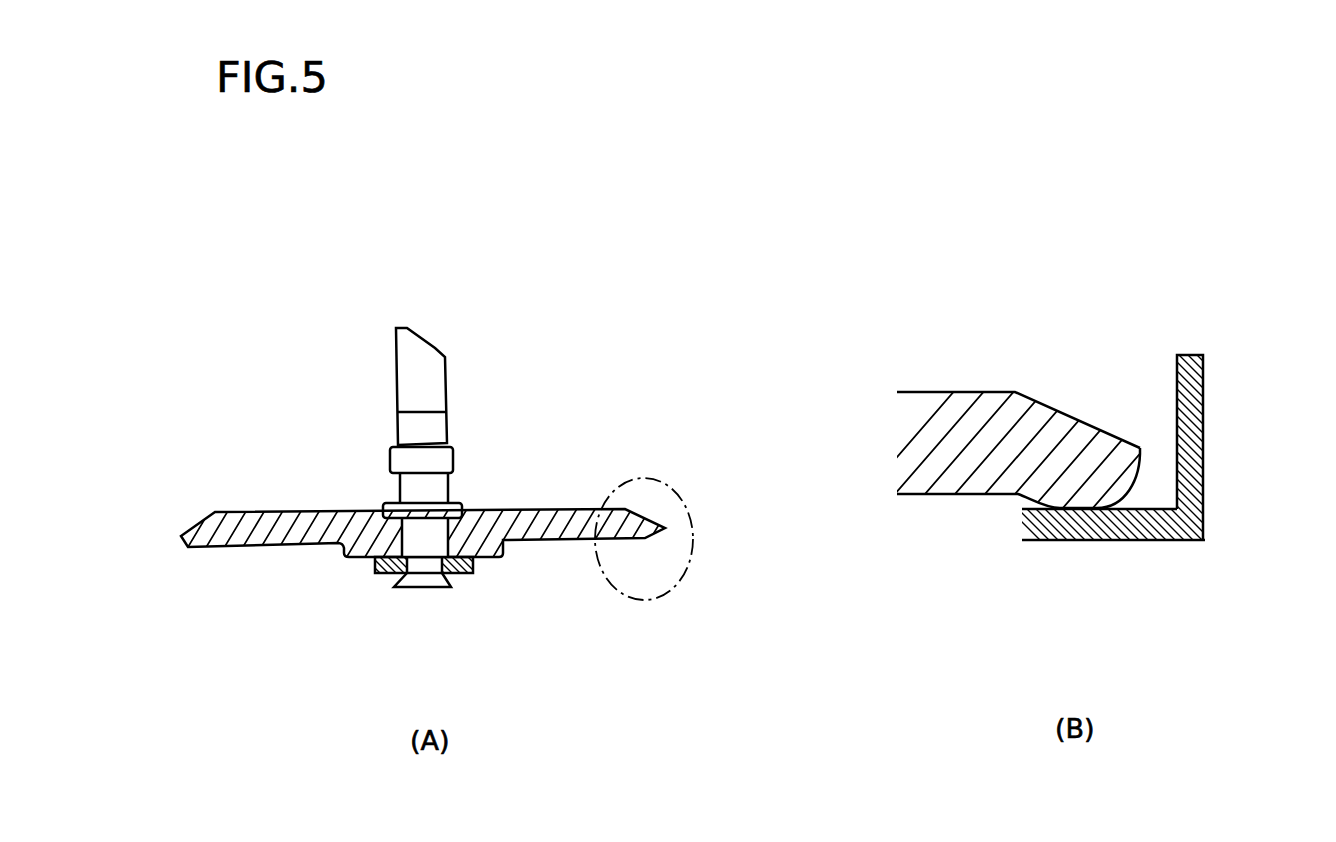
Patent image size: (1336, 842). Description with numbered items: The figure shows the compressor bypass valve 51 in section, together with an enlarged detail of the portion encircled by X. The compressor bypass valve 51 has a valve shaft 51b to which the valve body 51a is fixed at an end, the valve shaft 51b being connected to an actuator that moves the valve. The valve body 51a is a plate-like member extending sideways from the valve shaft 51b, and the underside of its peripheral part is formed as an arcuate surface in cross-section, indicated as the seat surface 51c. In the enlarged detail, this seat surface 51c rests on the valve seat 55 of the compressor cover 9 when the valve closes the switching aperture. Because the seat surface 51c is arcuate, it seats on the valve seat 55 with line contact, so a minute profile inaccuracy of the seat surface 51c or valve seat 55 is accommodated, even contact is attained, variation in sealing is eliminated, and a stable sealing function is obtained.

The compressor bypass valve 51 is at (266, 511).
The valve body 51a is at (512, 510).
The valve shaft 51b is at (403, 363).
The seat surface 51c is at (1121, 512).
The compressor cover 9 is at (1163, 511).
The valve seat 55 is at (1133, 503).
The encircled portion X is at (687, 505).